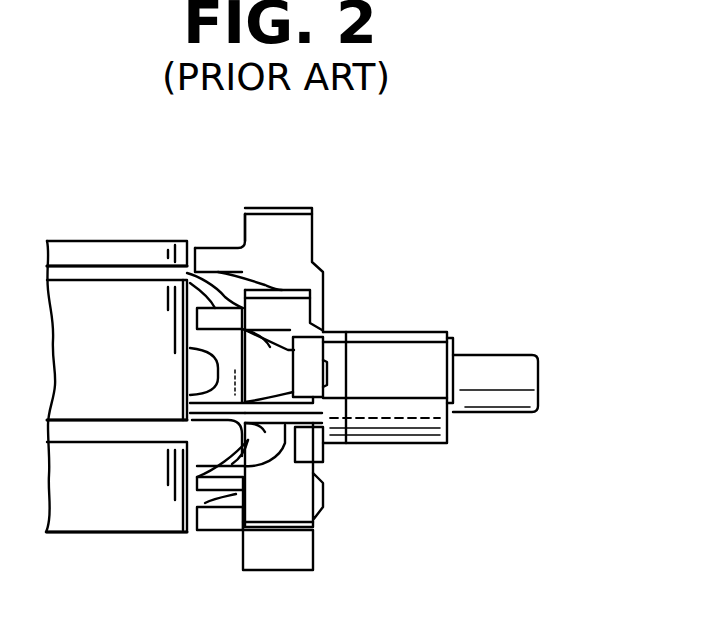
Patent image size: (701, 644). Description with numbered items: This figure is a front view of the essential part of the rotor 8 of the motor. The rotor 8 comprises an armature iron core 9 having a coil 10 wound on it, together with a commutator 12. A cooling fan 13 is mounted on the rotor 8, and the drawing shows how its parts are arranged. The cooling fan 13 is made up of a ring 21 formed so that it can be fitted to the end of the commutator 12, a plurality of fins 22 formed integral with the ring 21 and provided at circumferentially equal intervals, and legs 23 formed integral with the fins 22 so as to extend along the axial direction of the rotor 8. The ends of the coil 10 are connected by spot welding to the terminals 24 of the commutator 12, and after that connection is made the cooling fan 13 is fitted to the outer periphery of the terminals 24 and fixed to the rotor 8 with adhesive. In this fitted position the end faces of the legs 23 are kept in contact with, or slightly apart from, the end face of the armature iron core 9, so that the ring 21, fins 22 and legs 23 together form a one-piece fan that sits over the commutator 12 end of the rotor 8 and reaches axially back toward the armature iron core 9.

The rotor 8 is at (100, 233).
The armature iron core 9 is at (140, 257).
The coil 10 is at (218, 287).
The commutator 12 is at (420, 326).
The cooling fan 13 is at (293, 235).
The ring 21 is at (307, 447).
The fins 22 is at (300, 545).
The legs 23 is at (218, 518).
The terminals 24 is at (343, 368).